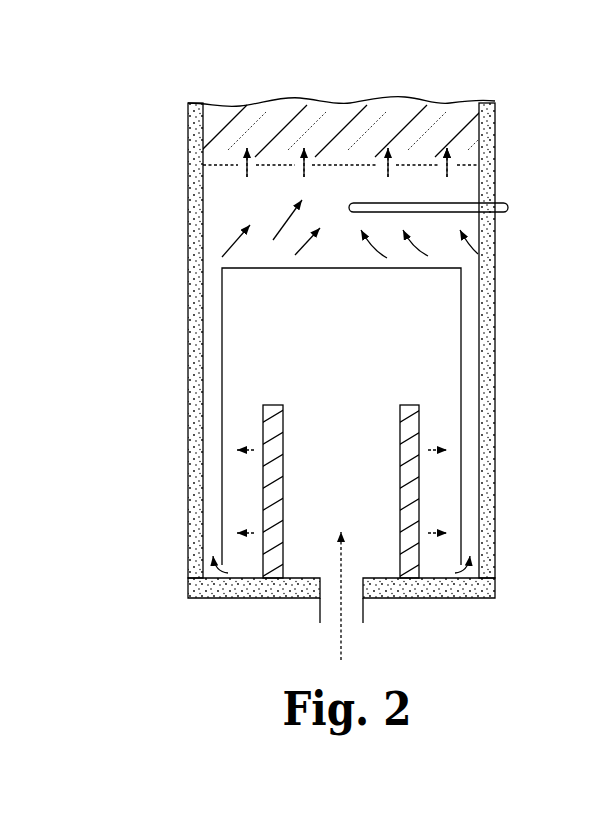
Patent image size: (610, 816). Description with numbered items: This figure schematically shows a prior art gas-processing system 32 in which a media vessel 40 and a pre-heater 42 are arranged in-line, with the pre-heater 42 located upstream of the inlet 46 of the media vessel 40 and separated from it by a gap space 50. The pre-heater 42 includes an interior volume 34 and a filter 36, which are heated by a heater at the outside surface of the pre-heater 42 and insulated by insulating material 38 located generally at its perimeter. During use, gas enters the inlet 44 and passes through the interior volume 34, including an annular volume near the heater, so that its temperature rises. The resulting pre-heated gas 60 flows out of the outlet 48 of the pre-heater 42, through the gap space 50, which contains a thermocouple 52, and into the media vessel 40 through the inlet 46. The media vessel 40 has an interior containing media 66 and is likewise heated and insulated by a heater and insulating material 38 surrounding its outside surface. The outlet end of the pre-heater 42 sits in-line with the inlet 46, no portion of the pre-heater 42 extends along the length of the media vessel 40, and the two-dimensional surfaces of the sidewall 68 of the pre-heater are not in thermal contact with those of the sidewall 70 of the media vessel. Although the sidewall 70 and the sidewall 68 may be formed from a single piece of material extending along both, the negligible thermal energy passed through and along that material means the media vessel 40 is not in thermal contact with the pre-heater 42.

The gas-processing system 32 is at (143, 399).
The interior volume 34 is at (329, 346).
The filter 36 is at (416, 488).
The insulating material 38 is at (203, 247).
The media vessel 40 is at (518, 123).
The pre-heater 42 is at (505, 336).
The inlet 44 is at (364, 615).
The inlet 46 is at (465, 159).
The outlet 48 is at (205, 270).
The gap space 50 is at (243, 205).
The thermocouple 52 is at (478, 202).
The pre-heated gas 60 is at (345, 360).
The media 66 is at (338, 139).
The sidewall 68 is at (196, 475).
The sidewall 70 is at (190, 134).